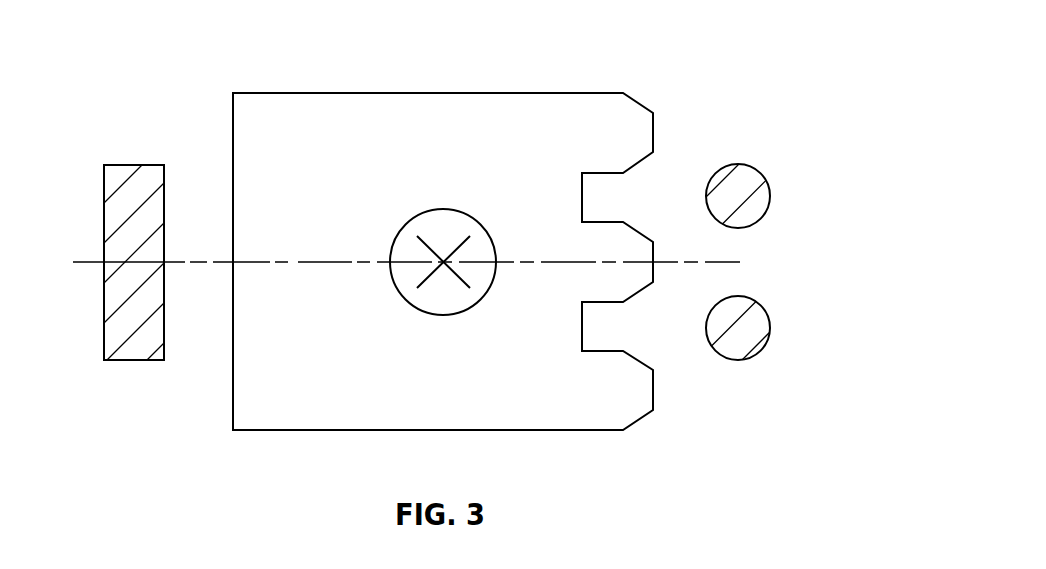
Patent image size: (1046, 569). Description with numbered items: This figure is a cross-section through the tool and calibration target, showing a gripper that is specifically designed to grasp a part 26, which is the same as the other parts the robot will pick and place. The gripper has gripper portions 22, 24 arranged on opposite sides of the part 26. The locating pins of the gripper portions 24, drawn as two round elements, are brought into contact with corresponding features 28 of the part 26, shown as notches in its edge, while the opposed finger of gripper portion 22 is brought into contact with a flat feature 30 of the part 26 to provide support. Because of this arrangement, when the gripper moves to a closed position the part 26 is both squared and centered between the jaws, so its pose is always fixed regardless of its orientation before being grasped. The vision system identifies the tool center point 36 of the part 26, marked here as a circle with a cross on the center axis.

The gripper portion 22 is at (142, 165).
The gripper portions 24 is at (770, 317).
The part 26 is at (365, 202).
The features 28 is at (603, 327).
The flat feature 30 is at (233, 192).
The tool center point 36 is at (445, 208).